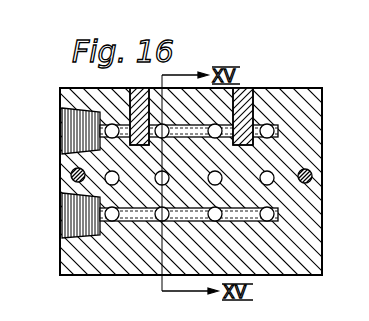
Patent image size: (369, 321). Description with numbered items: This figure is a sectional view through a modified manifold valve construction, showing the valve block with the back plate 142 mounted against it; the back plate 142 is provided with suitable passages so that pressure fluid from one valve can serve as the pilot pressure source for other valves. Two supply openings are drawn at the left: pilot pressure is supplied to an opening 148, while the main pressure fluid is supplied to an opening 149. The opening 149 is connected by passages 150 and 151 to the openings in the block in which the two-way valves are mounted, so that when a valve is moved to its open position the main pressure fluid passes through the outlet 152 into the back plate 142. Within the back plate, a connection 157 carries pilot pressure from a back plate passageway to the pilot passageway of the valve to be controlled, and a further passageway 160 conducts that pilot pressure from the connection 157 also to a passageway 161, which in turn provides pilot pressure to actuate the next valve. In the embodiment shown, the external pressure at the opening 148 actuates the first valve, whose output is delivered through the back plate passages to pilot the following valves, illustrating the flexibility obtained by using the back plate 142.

The back plate 142 is at (338, 74).
The opening 148 is at (66, 128).
The opening 149 is at (63, 222).
The passage 150 is at (128, 222).
The passage 151 is at (176, 222).
The outlet 152 is at (170, 179).
The connection 157 is at (165, 127).
The passageway 160 is at (194, 131).
The passageway 161 is at (215, 139).